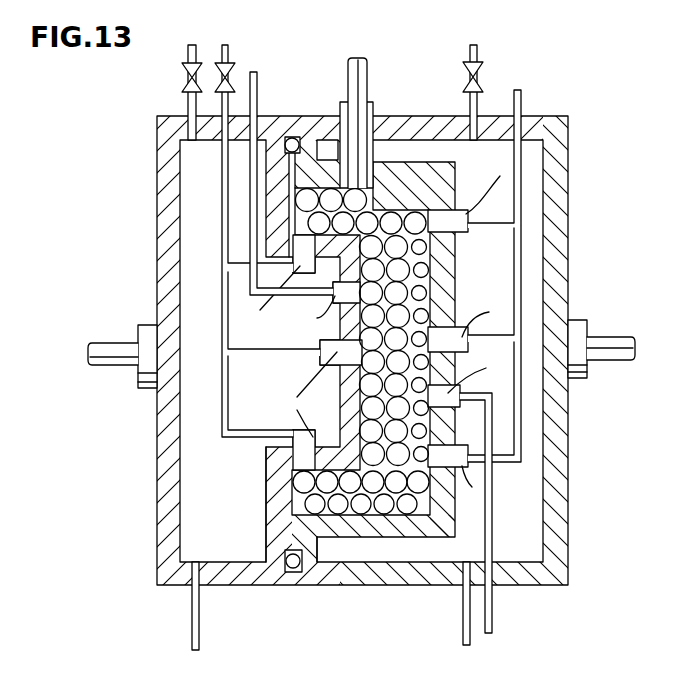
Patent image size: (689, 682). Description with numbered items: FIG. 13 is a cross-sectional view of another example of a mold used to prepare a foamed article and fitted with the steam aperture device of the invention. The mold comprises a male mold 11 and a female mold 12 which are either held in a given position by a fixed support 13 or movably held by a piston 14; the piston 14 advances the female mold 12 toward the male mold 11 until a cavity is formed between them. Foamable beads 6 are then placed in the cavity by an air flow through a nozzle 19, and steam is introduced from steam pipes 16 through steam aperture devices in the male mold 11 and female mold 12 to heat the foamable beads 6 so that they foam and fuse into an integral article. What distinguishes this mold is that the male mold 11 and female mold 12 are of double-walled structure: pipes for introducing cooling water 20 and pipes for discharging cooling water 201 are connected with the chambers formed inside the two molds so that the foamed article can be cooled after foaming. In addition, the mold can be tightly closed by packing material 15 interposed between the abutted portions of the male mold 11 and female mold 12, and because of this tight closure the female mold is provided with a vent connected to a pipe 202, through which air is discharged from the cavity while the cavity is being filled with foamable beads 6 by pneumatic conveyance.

The foamable beads 6 is at (396, 508).
The male mold 11 is at (270, 202).
The female mold 12 is at (447, 285).
The fixed support 13 is at (110, 362).
The piston 14 is at (610, 360).
The packing material 15 is at (290, 576).
The steam pipe 16 is at (231, 63).
The nozzle 19 is at (360, 112).
The pipe for introducing cooling water 20 is at (185, 64).
The pipe for discharging cooling water 201 is at (196, 612).
The vent pipe 202 is at (256, 88).